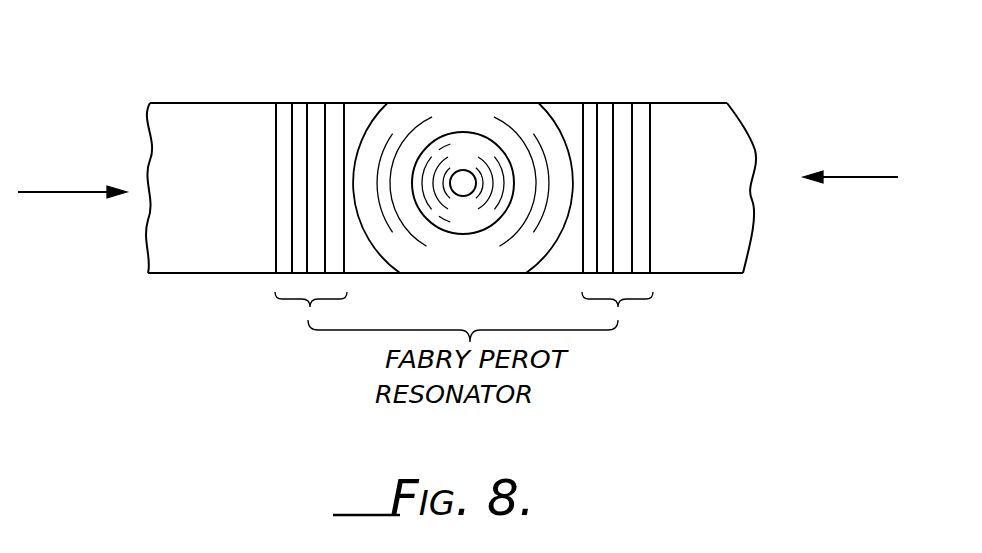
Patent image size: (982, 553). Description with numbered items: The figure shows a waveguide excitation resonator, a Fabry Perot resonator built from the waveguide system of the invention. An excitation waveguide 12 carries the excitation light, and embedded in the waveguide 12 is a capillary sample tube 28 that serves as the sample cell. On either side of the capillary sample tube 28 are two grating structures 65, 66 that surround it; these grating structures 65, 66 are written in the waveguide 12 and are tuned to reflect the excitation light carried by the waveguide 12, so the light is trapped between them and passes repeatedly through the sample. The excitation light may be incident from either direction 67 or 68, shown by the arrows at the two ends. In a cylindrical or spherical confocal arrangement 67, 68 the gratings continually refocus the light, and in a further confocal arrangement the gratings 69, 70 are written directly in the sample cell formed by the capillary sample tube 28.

The excitation waveguide 12 is at (480, 102).
The capillary sample tube 28 is at (437, 132).
The grating structure 65 is at (300, 315).
The grating structure 66 is at (626, 315).
The incident light direction 67 is at (80, 193).
The incident light direction 68 is at (848, 178).
The grating 69 is at (425, 158).
The grating 70 is at (488, 158).